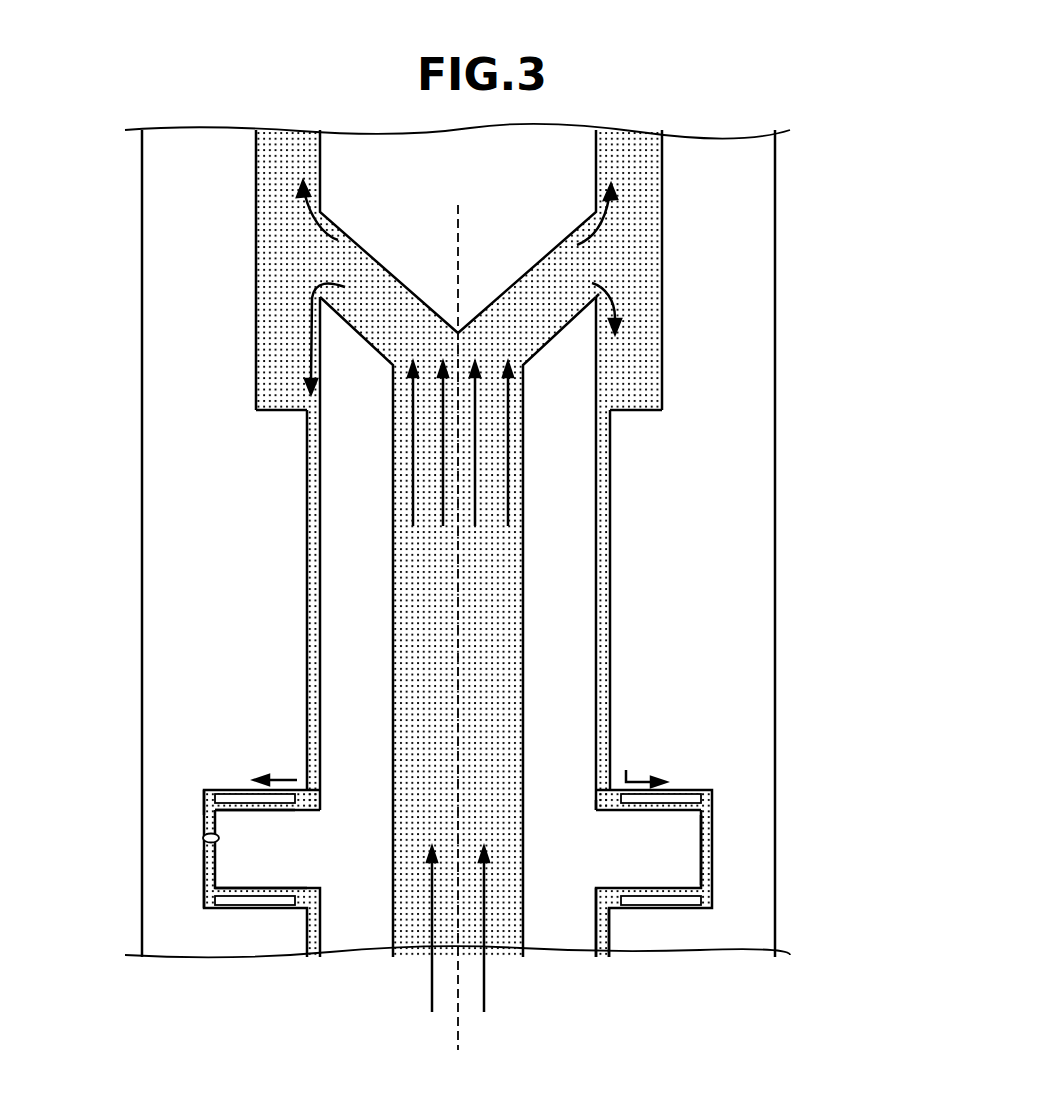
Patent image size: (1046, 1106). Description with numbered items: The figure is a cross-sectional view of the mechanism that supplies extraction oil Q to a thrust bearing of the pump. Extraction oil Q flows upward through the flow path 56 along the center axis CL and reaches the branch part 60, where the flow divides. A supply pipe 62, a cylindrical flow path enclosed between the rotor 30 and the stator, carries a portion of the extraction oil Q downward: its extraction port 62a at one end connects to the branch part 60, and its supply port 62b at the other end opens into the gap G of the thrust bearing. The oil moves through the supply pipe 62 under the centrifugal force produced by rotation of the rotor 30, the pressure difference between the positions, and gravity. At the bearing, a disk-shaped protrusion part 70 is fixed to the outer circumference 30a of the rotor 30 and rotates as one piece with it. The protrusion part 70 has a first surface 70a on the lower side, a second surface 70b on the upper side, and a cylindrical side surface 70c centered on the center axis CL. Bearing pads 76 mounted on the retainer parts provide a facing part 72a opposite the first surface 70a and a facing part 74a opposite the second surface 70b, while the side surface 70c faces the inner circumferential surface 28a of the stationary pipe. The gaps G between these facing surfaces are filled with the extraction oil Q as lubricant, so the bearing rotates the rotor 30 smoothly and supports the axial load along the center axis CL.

The inner circumferential surface 28a is at (205, 838).
The rotor 30 is at (365, 942).
The outer circumference 30a is at (600, 915).
The flow path 56 is at (487, 622).
The branch part 60 is at (348, 253).
The supply pipe 62 is at (642, 303).
The extraction port 62a is at (607, 295).
The supply port 62b is at (605, 800).
The protrusion part 70 is at (253, 868).
The first surface 70a is at (285, 890).
The second surface 70b is at (245, 803).
The side surface 70c is at (205, 862).
The facing part 72a is at (215, 886).
The facing part 74a is at (235, 812).
The bearing pad 76 is at (253, 793).
The center axis CL is at (458, 227).
The extraction oil Q is at (577, 245).
The gap G is at (725, 846).